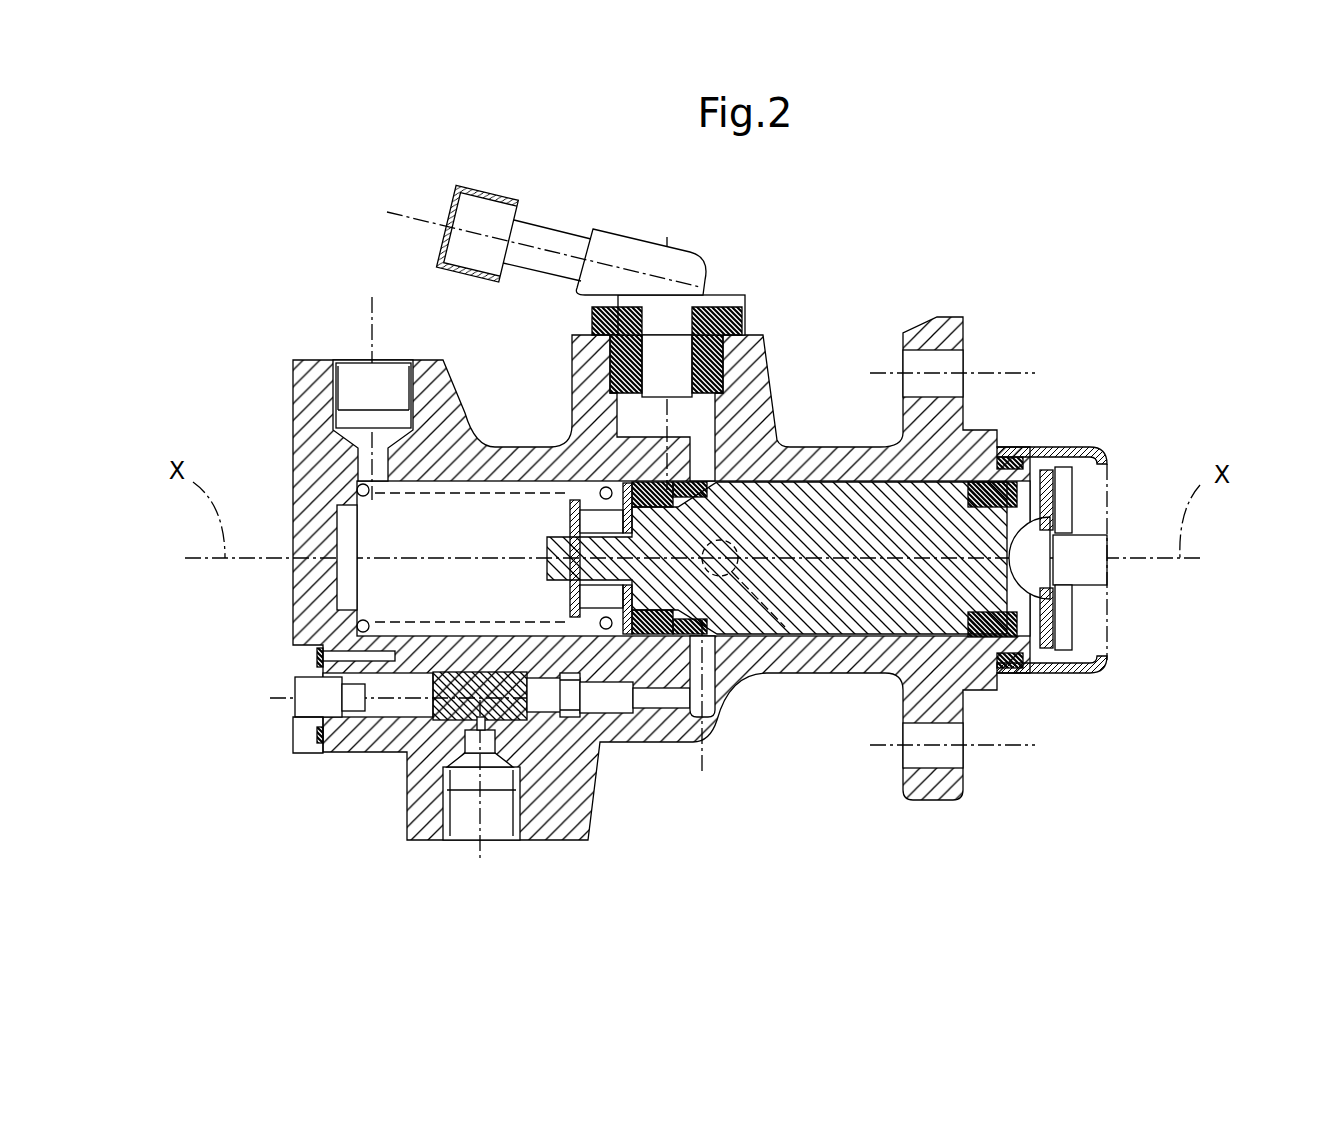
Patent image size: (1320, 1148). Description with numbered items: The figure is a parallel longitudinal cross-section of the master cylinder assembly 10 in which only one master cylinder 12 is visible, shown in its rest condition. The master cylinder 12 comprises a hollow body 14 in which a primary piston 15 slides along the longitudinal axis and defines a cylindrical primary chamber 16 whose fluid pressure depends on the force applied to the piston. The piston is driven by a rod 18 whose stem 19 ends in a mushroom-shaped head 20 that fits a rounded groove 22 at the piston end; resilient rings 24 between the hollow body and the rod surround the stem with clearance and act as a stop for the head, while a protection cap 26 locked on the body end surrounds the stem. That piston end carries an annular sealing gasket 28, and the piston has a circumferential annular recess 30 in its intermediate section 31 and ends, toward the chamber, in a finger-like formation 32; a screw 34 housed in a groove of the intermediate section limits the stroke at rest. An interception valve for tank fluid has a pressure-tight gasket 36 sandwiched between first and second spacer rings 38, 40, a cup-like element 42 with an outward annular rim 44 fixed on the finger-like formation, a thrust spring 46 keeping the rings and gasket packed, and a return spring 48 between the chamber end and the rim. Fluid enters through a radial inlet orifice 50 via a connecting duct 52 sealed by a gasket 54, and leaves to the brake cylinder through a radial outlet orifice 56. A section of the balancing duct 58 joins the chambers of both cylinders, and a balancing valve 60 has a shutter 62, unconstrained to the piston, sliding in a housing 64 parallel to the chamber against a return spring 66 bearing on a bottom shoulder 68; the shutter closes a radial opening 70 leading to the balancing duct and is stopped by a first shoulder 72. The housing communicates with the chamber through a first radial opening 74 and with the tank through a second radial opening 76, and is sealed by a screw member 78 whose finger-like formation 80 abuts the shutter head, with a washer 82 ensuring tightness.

The master cylinder assembly 10 is at (1053, 235).
The master cylinder 12 is at (950, 310).
The hollow body 14 is at (990, 435).
The primary piston 15 is at (850, 480).
The primary chamber 16 is at (455, 540).
The rod 18 is at (1090, 530).
The stem 19 is at (1097, 572).
The mushroom-shaped head 20 is at (1090, 443).
The rounded groove 22 is at (1020, 627).
The resilient rings 24 is at (1053, 620).
The protection cap 26 is at (1073, 673).
The annular sealing gasket 28 is at (983, 637).
The circumferential annular recess 30 is at (842, 577).
The intermediate section 31 is at (842, 577).
The finger-like formation 32 is at (660, 563).
The screw 34 is at (790, 645).
The pressure-tight gasket 36 is at (690, 630).
The first spacer ring 38 is at (776, 395).
The second spacer ring 40 is at (568, 478).
The cup-like element 42 is at (618, 710).
The annular rim 44 is at (626, 482).
The thrust spring 46 is at (600, 488).
The return spring 48 is at (417, 480).
The radial inlet orifice 50 is at (657, 395).
The connecting duct 52 is at (682, 267).
The gasket 54 is at (730, 308).
The radial outlet orifice 56 is at (352, 385).
The balancing duct 58 is at (463, 821).
The balancing valve 60 is at (460, 663).
The shutter 62 is at (397, 697).
The housing 64 is at (545, 708).
The return spring 66 is at (481, 726).
The bottom shoulder 68 is at (650, 630).
The radial opening 70 is at (450, 708).
The first shoulder 72 is at (573, 720).
The first radial opening 74 is at (320, 653).
The second radial opening 76 is at (716, 640).
The screw member 78 is at (292, 722).
The finger-like formation 80 is at (320, 735).
The washer 82 is at (313, 740).